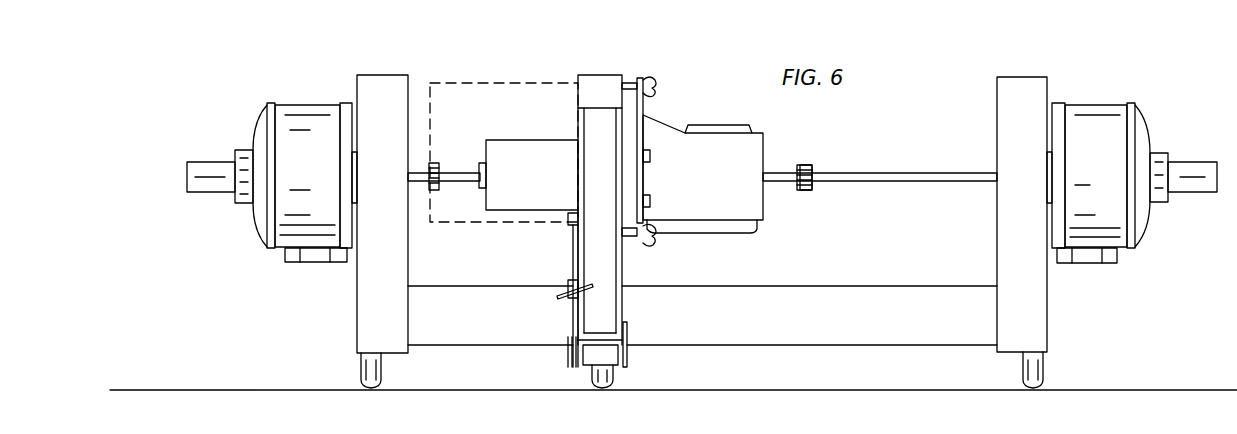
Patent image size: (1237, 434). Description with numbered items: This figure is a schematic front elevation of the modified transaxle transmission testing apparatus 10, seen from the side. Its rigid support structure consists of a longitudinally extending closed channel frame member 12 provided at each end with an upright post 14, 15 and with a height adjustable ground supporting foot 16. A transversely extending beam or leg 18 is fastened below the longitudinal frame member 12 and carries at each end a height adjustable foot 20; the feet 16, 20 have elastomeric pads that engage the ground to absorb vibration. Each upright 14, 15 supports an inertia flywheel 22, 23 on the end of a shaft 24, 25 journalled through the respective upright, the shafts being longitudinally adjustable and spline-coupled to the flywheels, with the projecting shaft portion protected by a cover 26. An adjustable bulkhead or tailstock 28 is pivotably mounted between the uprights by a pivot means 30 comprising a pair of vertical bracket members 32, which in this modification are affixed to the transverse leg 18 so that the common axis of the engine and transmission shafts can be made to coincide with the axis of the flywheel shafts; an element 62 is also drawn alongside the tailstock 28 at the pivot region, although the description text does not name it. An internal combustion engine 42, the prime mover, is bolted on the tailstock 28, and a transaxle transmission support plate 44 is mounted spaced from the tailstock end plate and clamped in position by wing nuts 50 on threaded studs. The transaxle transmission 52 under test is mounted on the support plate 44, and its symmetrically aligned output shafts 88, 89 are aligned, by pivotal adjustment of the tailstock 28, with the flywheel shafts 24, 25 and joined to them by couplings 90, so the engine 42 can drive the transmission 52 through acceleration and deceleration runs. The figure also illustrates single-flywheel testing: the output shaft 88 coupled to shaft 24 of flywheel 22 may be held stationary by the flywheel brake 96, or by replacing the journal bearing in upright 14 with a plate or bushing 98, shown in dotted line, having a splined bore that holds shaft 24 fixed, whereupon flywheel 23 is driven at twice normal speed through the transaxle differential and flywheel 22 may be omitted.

The transaxle transmission testing apparatus 10 is at (902, 127).
The closed channel frame member 12 is at (942, 292).
The upright post 14 is at (358, 330).
The upright post 15 is at (1041, 334).
The height adjustable ground supporting foot 16 is at (361, 370).
The transverse beam or leg 18 is at (622, 352).
The height adjustable foot 20 is at (617, 376).
The inertia flywheel 22 is at (297, 115).
The inertia flywheel 23 is at (1098, 115).
The shaft 24 is at (425, 172).
The shaft 25 is at (940, 172).
The cover 26 is at (218, 180).
The adjustable bulkhead or tailstock 28 is at (607, 74).
The pivot means 30 is at (636, 337).
The vertical bracket members 32 is at (629, 328).
The internal combustion engine 42 is at (523, 82).
The transaxle transmission support plate 44 is at (645, 92).
The wing nut 50 is at (650, 240).
The transaxle transmission 52 is at (728, 129).
The adjustment rod 62 is at (568, 311).
The output shaft 88 is at (780, 172).
The output shaft 89 is at (450, 163).
The coupling 90 is at (435, 192).
The flywheel brake 96 is at (322, 266).
The plate or bushing 98 is at (415, 157).